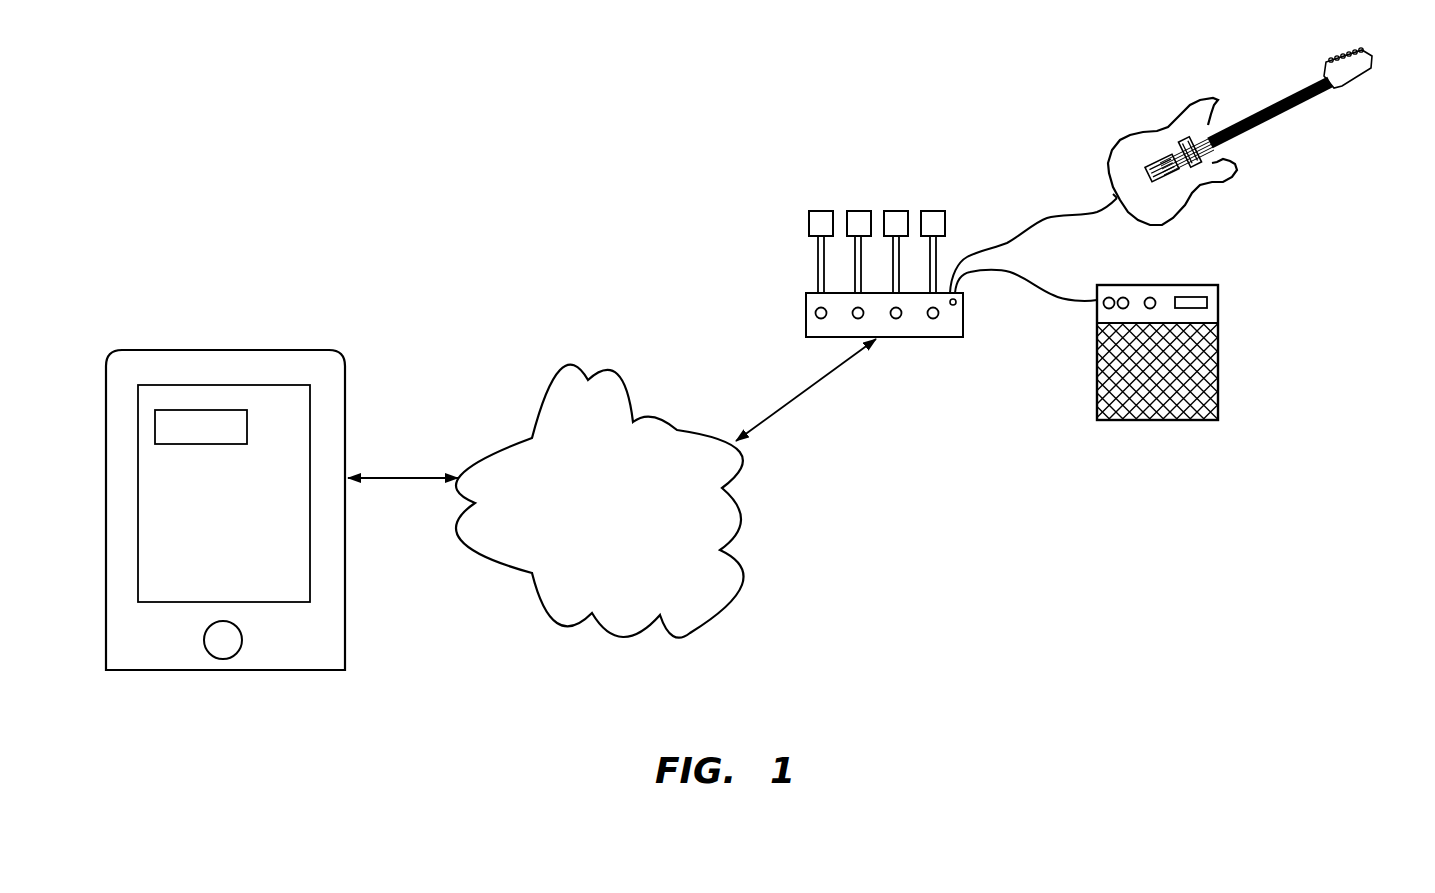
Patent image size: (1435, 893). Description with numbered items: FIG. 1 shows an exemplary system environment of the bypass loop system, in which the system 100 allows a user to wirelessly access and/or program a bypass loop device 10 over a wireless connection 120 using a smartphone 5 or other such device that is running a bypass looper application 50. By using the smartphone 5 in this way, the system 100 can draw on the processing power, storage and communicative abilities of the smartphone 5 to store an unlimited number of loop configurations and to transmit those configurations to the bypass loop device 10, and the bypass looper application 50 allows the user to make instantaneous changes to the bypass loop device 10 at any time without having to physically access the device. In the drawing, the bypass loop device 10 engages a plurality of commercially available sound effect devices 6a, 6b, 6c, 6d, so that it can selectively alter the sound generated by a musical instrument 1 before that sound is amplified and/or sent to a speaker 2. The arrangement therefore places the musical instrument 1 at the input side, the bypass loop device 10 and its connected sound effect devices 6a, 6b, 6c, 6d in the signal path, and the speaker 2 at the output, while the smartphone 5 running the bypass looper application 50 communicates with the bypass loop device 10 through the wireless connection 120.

The musical instrument 1 is at (1125, 152).
The speaker 2 is at (1200, 285).
The smartphone 5 is at (210, 350).
The sound effect device 6a is at (816, 211).
The sound effect device 6b is at (853, 211).
The sound effect device 6c is at (892, 211).
The sound effect device 6d is at (934, 211).
The bypass loop device 10 is at (798, 317).
The bypass looper application 50 is at (210, 444).
The system 100 is at (352, 220).
The wireless connection 120 is at (580, 545).